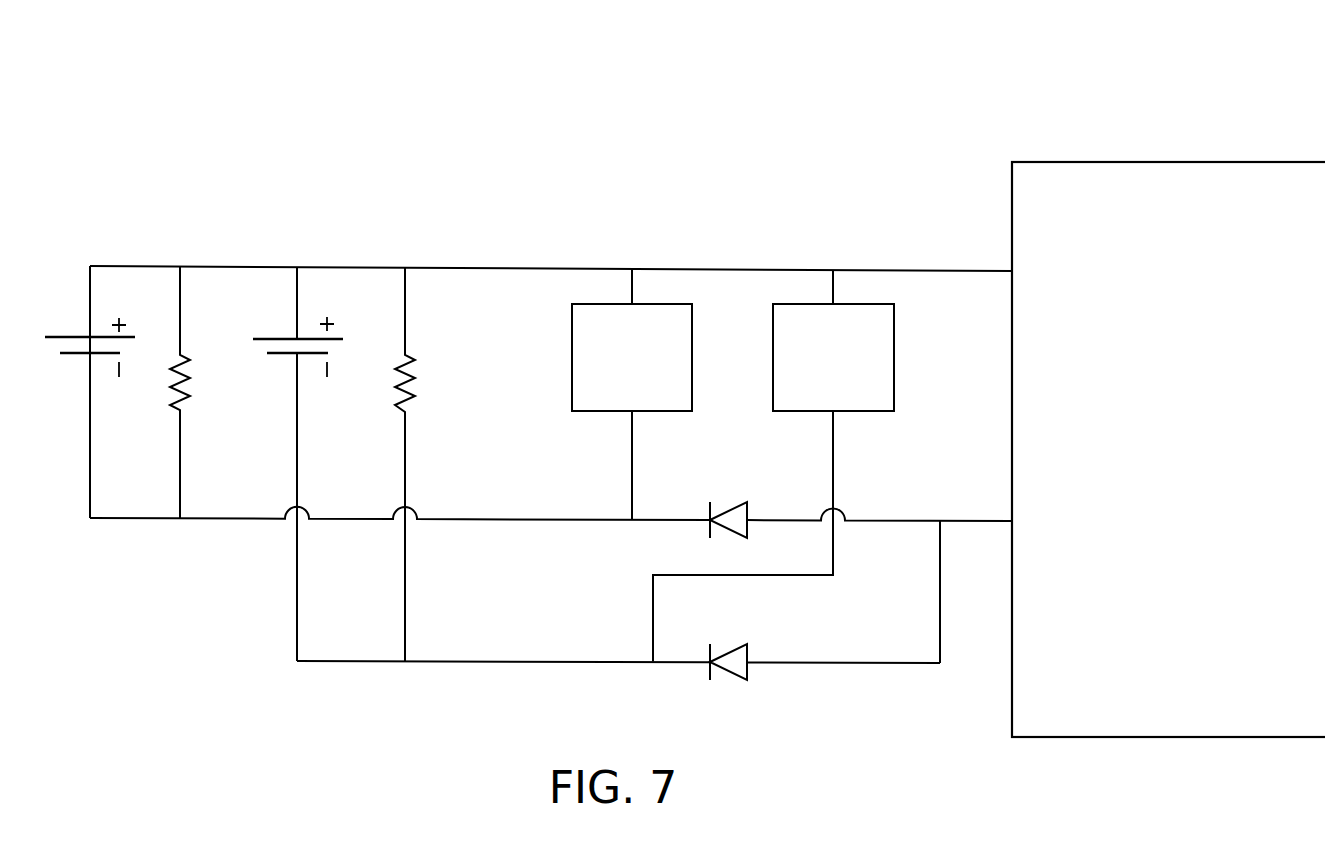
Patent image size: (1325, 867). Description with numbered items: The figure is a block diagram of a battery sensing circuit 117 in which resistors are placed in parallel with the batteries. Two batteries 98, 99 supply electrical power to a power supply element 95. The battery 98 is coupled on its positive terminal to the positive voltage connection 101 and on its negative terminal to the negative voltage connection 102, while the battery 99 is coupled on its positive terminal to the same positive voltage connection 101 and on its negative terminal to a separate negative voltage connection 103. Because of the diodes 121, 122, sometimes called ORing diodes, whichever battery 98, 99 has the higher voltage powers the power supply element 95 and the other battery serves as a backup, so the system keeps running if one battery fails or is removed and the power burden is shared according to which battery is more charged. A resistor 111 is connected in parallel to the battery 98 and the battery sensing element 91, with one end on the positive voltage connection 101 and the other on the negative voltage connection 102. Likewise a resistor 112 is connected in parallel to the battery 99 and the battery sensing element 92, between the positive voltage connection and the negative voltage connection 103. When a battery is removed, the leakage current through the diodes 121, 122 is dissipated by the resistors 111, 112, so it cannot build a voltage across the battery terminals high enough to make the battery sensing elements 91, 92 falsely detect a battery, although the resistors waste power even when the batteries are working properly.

The battery sensing circuit 117 is at (528, 78).
The battery 98 is at (90, 302).
The battery 99 is at (297, 302).
The resistor 111 is at (180, 412).
The resistor 112 is at (405, 352).
The positive voltage connection 101 is at (508, 266).
The negative voltage connection 102 is at (467, 519).
The negative voltage connection 103 is at (458, 661).
The battery sensing element 91 is at (655, 303).
The battery sensing element 92 is at (870, 303).
The diode 121 is at (739, 500).
The diode 122 is at (745, 643).
The power supply element 95 is at (1228, 162).